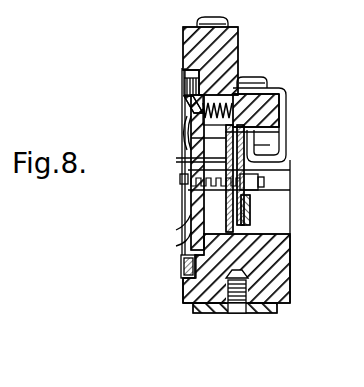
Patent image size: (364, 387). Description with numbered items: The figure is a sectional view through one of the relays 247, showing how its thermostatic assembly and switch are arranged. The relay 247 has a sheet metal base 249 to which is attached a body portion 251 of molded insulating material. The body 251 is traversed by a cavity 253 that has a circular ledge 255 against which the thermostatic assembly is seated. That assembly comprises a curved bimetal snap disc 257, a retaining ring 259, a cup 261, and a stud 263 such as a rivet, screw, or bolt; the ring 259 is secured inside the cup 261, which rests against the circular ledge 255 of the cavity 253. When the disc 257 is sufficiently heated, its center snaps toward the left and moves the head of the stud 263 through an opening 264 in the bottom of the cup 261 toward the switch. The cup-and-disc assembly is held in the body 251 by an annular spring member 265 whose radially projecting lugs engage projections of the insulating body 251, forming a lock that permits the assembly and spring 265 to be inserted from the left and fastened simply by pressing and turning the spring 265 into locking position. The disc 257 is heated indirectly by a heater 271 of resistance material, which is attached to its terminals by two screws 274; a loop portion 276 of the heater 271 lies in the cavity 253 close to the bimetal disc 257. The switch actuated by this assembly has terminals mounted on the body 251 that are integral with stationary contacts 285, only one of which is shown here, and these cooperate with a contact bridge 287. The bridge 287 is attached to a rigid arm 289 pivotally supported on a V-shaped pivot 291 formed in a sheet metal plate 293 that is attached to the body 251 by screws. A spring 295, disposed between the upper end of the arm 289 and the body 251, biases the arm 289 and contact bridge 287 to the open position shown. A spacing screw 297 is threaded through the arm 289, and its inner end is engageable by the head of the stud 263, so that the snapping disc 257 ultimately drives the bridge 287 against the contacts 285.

The relay 247 is at (281, 116).
The sheet metal base 249 is at (270, 313).
The body portion 251 is at (275, 290).
The cavity 253 is at (265, 146).
The circular ledge 255 is at (262, 100).
The bimetal snap disc 257 is at (257, 167).
The retaining ring 259 is at (262, 133).
The cup 261 is at (196, 203).
The stud 263 is at (264, 182).
The opening 264 is at (183, 160).
The annular spring member 265 is at (196, 236).
The heater 271 is at (330, 115).
The screws 274 is at (256, 77).
The loop portion 276 is at (253, 217).
The stationary contacts 285 is at (181, 265).
The contact bridge 287 is at (185, 282).
The rigid arm 289 is at (200, 215).
The V-shaped pivot 291 is at (184, 134).
The sheet metal plate 293 is at (186, 82).
The spring 295 is at (184, 108).
The spacing screw 297 is at (180, 178).